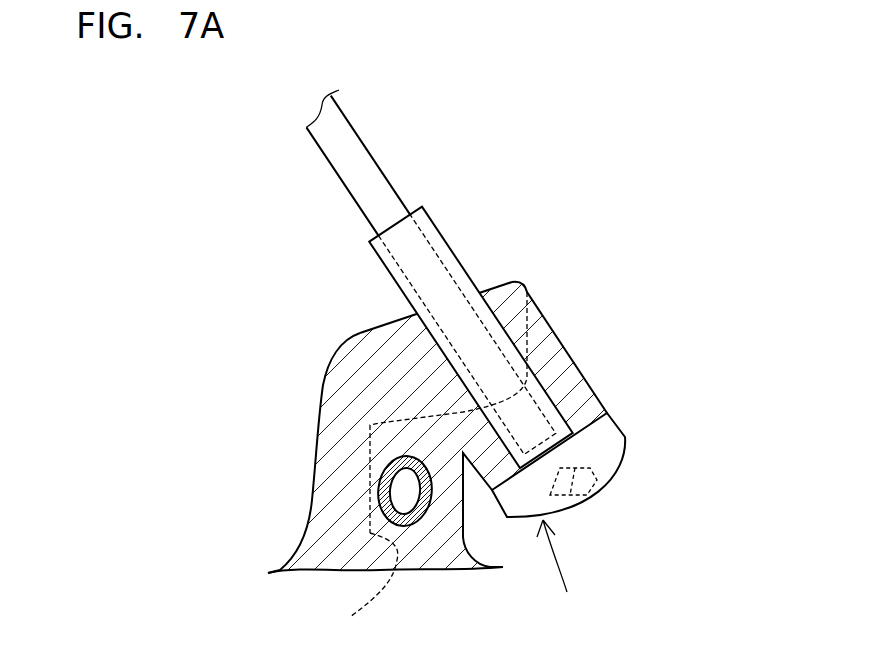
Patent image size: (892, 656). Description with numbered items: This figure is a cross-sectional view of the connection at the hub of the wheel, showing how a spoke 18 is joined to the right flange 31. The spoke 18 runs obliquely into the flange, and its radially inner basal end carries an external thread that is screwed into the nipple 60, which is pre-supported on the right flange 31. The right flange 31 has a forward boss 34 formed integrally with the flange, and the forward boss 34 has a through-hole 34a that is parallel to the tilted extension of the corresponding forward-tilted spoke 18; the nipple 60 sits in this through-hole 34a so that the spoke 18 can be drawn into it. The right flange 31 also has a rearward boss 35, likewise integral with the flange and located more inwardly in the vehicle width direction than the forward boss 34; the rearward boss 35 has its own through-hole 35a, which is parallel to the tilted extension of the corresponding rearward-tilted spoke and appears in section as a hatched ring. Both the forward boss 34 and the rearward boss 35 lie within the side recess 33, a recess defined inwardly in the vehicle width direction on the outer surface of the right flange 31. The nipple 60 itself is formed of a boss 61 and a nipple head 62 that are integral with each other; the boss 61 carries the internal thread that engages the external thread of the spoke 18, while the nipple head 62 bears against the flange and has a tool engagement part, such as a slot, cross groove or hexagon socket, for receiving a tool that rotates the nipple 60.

The spoke 18 is at (320, 148).
The right flange 31 is at (511, 282).
The side recess 33 is at (360, 587).
The forward boss 34 is at (567, 348).
The through-hole 34a is at (531, 452).
The rearward boss 35 is at (383, 442).
The through-hole 35a is at (403, 514).
The nipple 60 is at (561, 571).
The boss 61 is at (393, 278).
The nipple head 62 is at (623, 448).